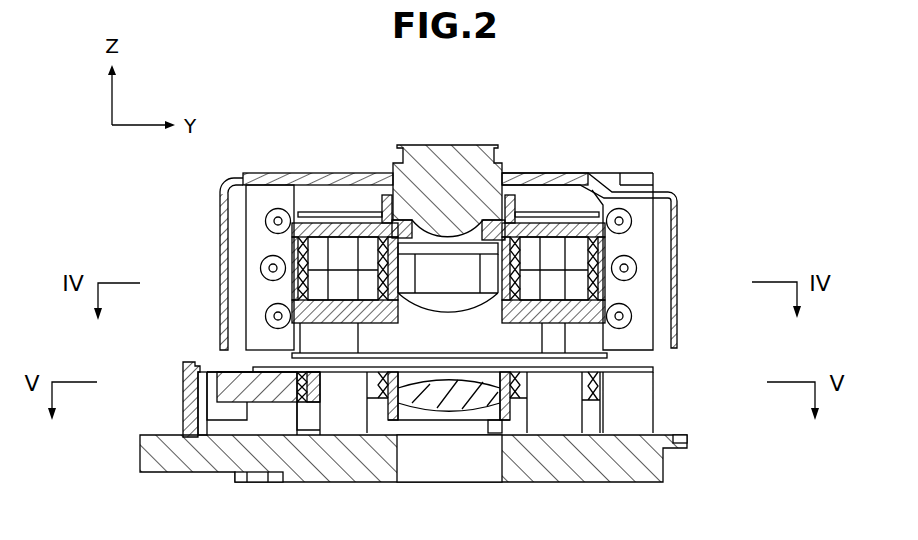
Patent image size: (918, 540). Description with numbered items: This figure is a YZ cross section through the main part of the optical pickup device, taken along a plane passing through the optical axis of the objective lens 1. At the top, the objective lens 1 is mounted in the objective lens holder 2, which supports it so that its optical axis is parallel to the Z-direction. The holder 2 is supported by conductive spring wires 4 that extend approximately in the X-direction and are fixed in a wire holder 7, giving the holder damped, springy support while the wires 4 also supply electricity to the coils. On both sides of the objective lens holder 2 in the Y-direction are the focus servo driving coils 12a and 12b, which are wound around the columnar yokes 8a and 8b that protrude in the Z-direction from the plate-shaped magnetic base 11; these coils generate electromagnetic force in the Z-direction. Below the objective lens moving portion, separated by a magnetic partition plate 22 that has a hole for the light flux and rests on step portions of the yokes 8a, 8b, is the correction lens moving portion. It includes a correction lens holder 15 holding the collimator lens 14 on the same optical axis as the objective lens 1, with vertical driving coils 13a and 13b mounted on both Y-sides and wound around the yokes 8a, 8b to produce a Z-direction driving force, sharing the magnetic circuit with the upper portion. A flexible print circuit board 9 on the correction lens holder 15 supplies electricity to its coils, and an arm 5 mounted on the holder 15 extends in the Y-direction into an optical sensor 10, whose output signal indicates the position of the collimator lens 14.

The objective lens 1 is at (447, 152).
The objective lens holder 2 is at (533, 228).
The wires 4 is at (633, 223).
The arm 5 is at (263, 387).
The wire holder 7 is at (253, 203).
The yoke 8a is at (557, 287).
The yoke 8b is at (338, 298).
The flexible print circuit board 9 is at (343, 358).
The optical sensor 10 is at (188, 395).
The base 11 is at (657, 458).
The focus servo driving coil 12a is at (608, 250).
The focus servo driving coil 12b is at (295, 248).
The vertical driving coil 13a is at (600, 385).
The vertical driving coil 13b is at (303, 373).
The collimator lens 14 is at (465, 402).
The correction lens holder 15 is at (508, 407).
The partition plate 22 is at (585, 357).